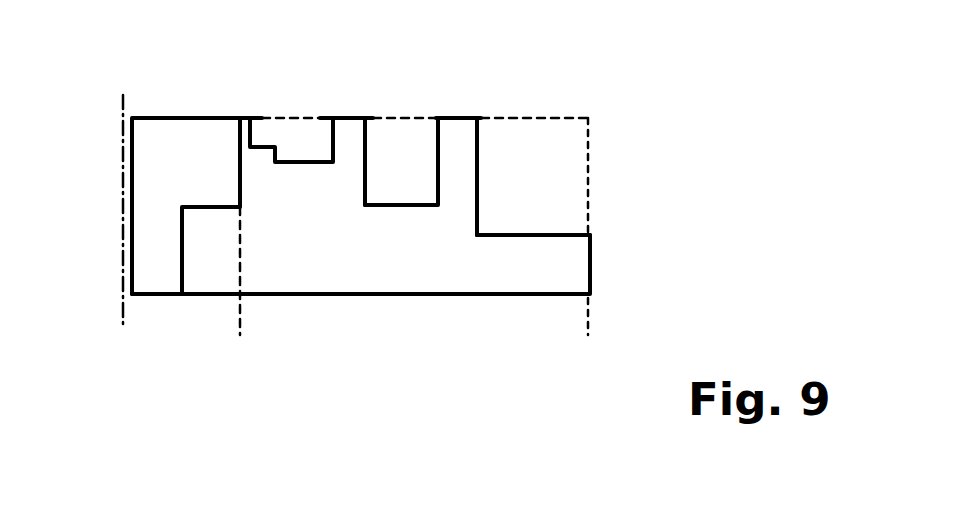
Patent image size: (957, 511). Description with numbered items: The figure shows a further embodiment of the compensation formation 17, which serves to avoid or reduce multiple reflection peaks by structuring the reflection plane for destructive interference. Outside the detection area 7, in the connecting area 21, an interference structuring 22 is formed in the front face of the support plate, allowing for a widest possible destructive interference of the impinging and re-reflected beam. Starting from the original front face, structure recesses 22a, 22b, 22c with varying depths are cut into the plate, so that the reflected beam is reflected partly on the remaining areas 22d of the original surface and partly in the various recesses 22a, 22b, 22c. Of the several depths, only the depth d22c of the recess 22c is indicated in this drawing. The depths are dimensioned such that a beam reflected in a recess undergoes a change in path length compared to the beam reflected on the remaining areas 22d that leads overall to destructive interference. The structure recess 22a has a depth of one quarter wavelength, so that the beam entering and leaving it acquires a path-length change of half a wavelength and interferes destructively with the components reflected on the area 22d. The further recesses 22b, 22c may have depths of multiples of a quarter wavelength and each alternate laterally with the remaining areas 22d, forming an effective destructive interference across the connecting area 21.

The detection area 7 is at (238, 80).
The compensation formation 17 is at (636, 84).
The connecting area 21 is at (583, 338).
The interference structuring 22 is at (597, 273).
The structure recess 22a is at (302, 140).
The structure recess 22b is at (403, 150).
The structure recess 22c is at (533, 148).
The remaining areas 22d is at (348, 113).
The depth of recess 22c d22c is at (600, 120).